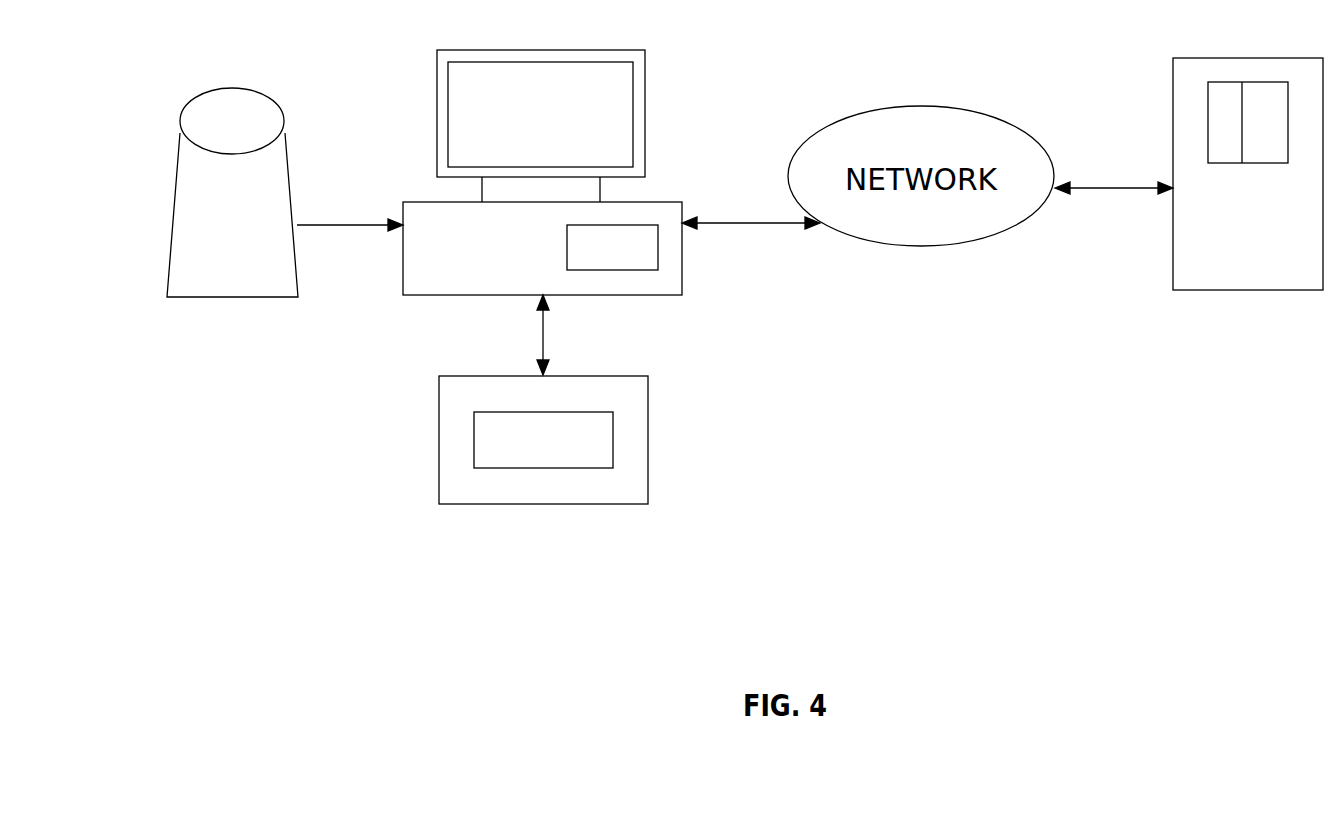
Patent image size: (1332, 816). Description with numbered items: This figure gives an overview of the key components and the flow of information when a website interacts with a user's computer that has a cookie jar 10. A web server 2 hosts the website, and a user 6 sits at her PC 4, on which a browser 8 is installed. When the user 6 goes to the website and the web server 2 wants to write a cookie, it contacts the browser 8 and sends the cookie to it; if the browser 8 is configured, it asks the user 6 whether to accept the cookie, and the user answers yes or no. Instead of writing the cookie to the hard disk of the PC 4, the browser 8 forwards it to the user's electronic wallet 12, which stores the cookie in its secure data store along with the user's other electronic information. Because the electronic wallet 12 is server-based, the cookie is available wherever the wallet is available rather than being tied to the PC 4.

The web server 2 is at (1240, 57).
The user's PC 4 is at (645, 83).
The user 6 is at (237, 85).
The browser 8 is at (635, 260).
The cookie jar 10 is at (579, 457).
The electronic wallet 12 is at (649, 445).